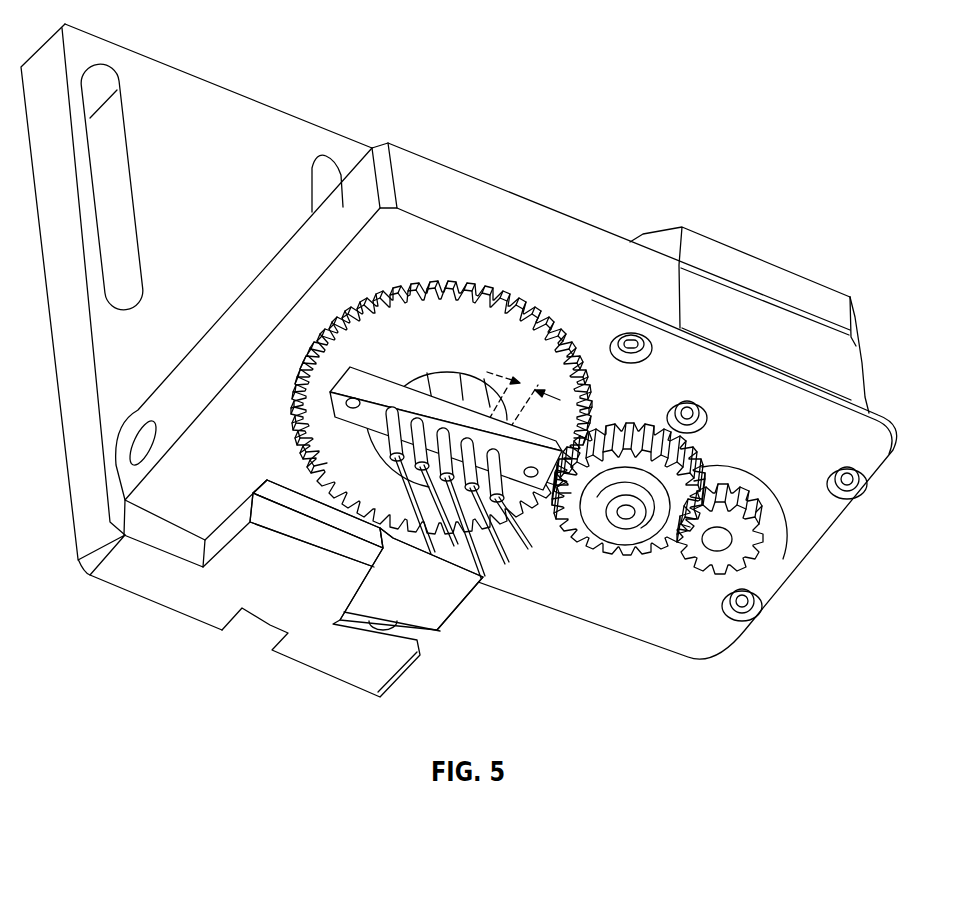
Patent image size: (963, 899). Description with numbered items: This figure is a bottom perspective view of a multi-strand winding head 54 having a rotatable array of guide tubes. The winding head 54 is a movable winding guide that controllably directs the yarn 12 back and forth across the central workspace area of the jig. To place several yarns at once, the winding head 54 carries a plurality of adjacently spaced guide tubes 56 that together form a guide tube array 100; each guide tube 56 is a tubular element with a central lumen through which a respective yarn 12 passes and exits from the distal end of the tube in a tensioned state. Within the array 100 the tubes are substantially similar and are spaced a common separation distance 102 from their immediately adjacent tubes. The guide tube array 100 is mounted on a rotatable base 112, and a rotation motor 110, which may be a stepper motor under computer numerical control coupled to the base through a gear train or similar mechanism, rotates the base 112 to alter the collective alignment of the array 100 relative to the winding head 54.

The yarn 12 is at (515, 557).
The winding head 54 is at (631, 205).
The guide tube 56 is at (365, 437).
The guide tube array 100 is at (439, 390).
The separation distance 102 is at (560, 400).
The rotation motor 110 is at (782, 283).
The rotatable base 112 is at (368, 405).